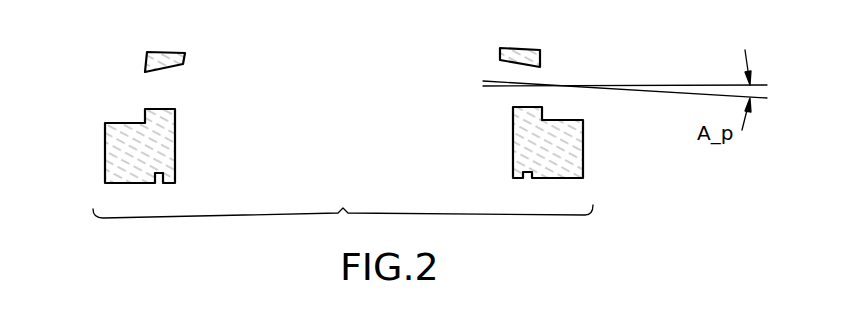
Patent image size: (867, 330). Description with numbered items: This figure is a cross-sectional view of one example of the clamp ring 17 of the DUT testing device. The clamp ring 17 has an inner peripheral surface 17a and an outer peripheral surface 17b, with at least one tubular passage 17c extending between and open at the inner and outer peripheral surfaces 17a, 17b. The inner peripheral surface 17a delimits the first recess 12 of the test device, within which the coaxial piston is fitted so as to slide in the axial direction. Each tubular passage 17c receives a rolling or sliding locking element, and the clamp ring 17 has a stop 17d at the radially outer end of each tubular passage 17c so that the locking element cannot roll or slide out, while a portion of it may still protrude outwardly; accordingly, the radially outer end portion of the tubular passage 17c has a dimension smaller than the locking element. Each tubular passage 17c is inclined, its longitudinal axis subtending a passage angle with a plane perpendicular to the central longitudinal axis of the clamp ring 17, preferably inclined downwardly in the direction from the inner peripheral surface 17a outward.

The first recess 12 is at (327, 97).
The clamp ring 17 is at (562, 207).
The inner peripheral surface 17a is at (175, 155).
The outer peripheral surface 17b is at (542, 60).
The tubular passage 17c is at (162, 92).
The stop 17d is at (143, 63).